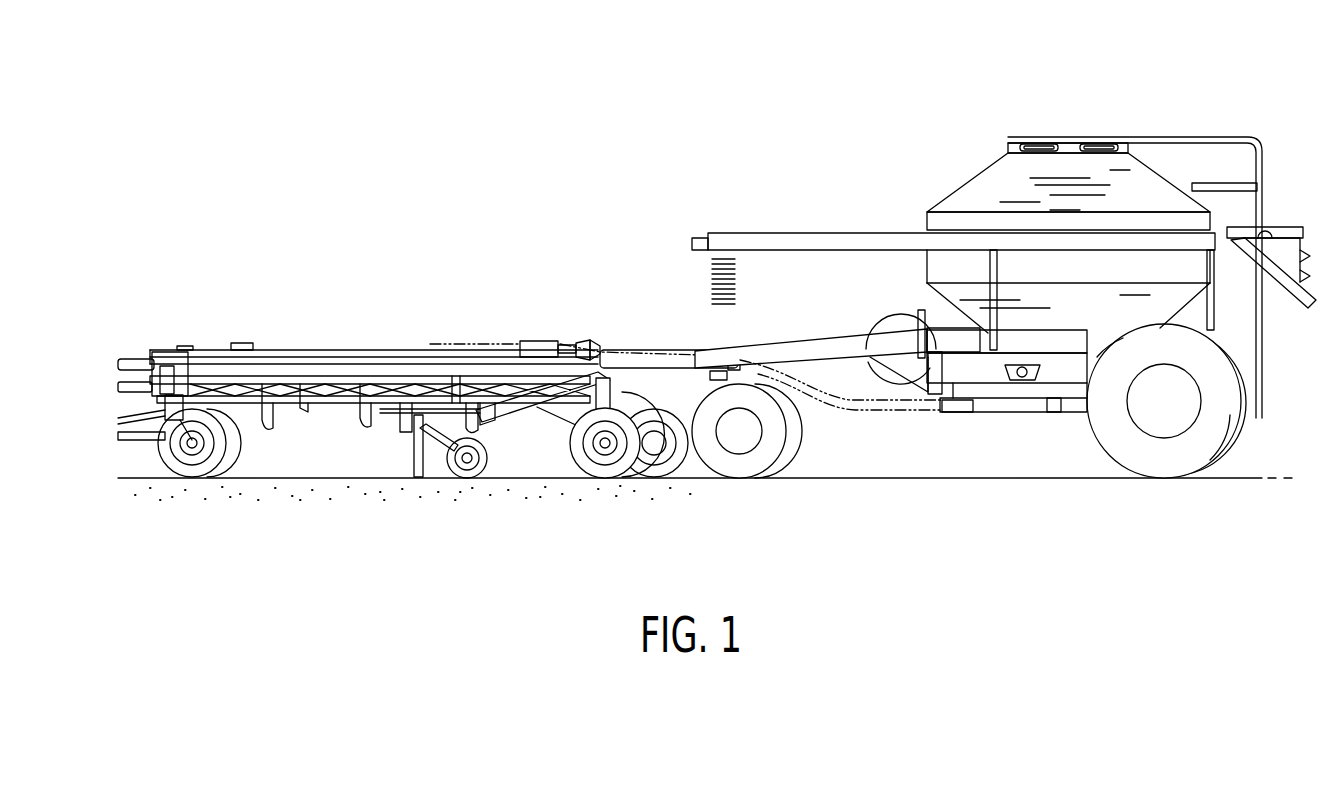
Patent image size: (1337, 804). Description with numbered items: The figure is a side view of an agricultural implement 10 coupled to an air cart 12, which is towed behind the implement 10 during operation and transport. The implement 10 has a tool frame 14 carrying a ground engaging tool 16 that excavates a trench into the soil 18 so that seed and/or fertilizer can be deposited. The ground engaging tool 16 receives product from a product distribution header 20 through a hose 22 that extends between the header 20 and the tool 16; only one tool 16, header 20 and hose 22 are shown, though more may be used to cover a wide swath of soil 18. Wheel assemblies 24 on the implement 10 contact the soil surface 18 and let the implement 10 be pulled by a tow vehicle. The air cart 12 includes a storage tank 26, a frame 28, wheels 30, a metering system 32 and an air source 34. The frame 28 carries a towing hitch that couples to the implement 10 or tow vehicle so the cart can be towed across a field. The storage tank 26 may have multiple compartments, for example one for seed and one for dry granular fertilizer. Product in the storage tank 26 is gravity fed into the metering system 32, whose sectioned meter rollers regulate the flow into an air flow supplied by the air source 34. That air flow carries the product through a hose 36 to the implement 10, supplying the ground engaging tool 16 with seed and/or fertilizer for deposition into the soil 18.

The implement 10 is at (349, 297).
The air cart 12 is at (1004, 250).
The tool frame 14 is at (405, 367).
The ground engaging tool 16 is at (413, 480).
The soil 18 is at (518, 481).
The product distribution header 20 is at (540, 341).
The hose 22 is at (472, 344).
The wheel assemblies 24 is at (193, 480).
The storage tank 26 is at (995, 174).
The frame 28 is at (805, 339).
The wheels 30 is at (807, 434).
The metering system 32 is at (1031, 374).
The air source 34 is at (877, 321).
The hose 36 is at (860, 414).